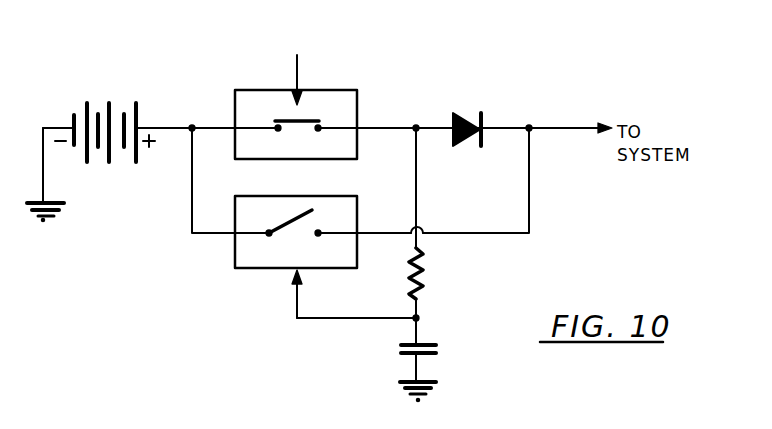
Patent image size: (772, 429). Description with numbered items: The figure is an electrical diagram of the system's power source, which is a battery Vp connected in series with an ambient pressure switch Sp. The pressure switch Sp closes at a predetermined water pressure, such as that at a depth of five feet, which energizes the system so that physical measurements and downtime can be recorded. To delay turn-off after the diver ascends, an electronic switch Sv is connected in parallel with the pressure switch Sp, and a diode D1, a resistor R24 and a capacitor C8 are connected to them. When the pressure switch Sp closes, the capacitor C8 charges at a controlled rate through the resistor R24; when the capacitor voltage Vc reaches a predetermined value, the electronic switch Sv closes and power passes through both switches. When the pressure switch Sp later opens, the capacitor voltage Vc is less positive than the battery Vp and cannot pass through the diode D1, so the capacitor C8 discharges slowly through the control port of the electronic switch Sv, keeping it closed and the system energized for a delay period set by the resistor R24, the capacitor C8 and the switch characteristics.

The power source Vp is at (117, 149).
The pressure switch Sp is at (296, 89).
The electronic switch Sv is at (360, 223).
The diode D1 is at (467, 144).
The resistor R24 is at (435, 223).
The capacitor voltage Vc is at (374, 322).
The capacitor C8 is at (396, 350).